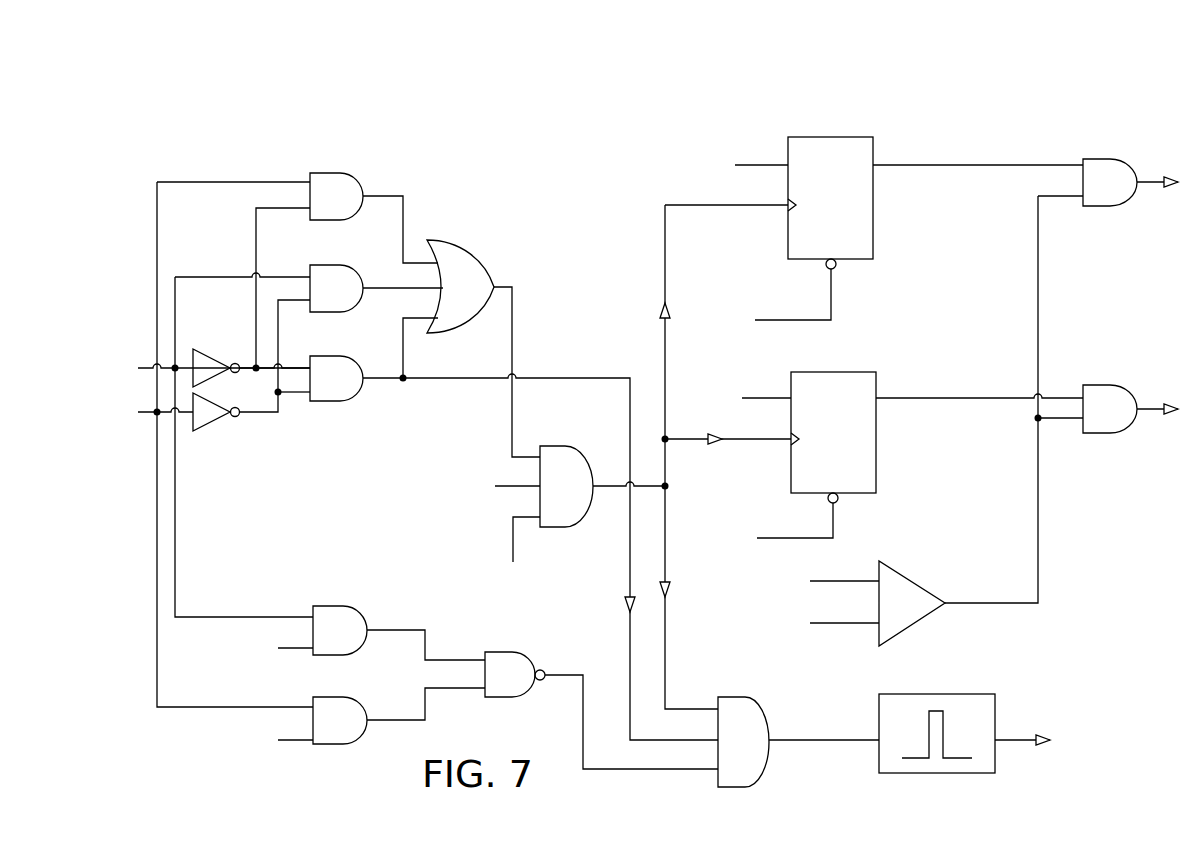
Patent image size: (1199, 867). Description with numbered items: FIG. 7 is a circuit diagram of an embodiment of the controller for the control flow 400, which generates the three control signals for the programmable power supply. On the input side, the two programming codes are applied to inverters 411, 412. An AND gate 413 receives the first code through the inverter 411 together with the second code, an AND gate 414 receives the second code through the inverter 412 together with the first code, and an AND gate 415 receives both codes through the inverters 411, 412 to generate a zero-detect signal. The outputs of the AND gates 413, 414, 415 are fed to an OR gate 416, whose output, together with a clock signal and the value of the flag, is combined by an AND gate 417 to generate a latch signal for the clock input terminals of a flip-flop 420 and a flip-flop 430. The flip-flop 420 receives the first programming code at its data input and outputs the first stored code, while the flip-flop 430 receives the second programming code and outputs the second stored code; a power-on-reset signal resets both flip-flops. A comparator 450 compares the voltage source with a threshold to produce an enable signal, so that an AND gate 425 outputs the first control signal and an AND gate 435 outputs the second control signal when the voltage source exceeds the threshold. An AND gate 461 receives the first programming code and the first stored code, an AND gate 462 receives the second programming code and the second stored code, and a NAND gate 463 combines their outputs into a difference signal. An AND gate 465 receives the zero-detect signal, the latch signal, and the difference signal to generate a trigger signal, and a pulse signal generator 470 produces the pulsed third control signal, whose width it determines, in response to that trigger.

The control flow 400 is at (1135, 84).
The inverter 411 is at (251, 297).
The inverter 412 is at (251, 374).
The AND gate 413 is at (374, 206).
The AND gate 414 is at (376, 276).
The AND gate 415 is at (374, 359).
The OR gate 416 is at (483, 337).
The AND gate 417 is at (561, 502).
The flip-flop 420 is at (866, 221).
The AND gate 425 is at (1125, 169).
The flip-flop 430 is at (880, 447).
The AND gate 435 is at (1125, 396).
The comparator 450 is at (851, 590).
The AND gate 461 is at (335, 620).
The AND gate 462 is at (335, 712).
The NAND gate 463 is at (601, 698).
The AND gate 465 is at (798, 729).
The pulse signal generator 470 is at (964, 720).